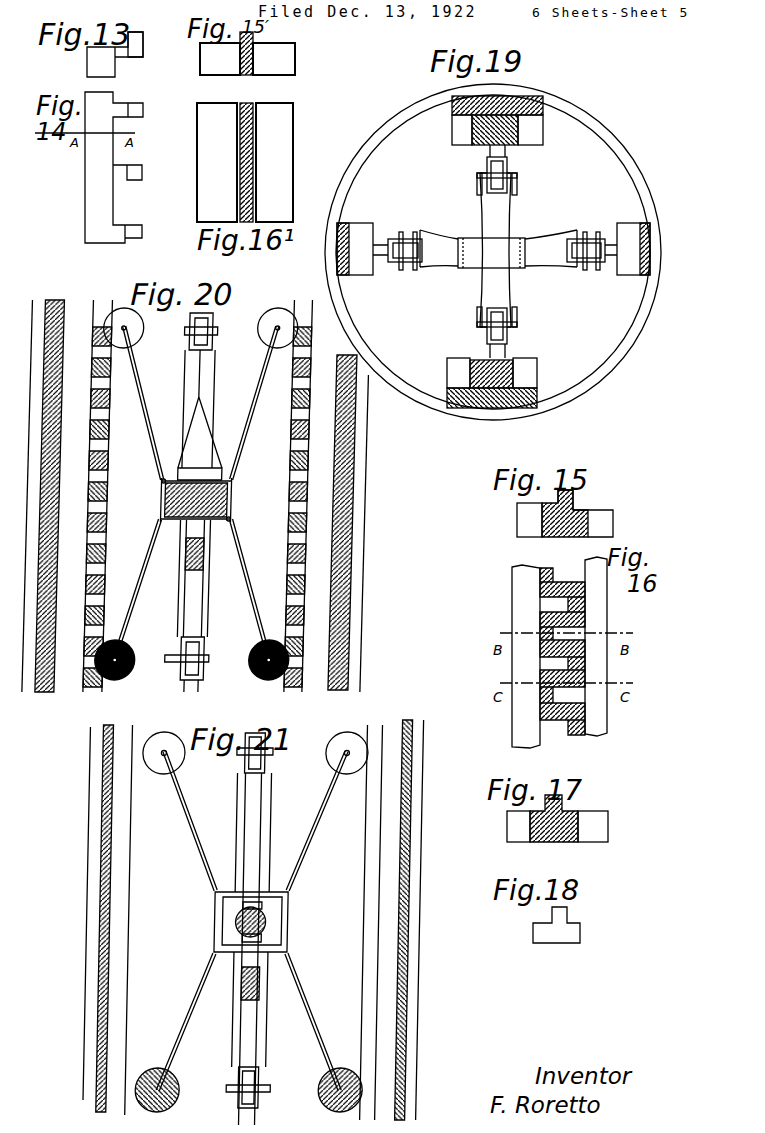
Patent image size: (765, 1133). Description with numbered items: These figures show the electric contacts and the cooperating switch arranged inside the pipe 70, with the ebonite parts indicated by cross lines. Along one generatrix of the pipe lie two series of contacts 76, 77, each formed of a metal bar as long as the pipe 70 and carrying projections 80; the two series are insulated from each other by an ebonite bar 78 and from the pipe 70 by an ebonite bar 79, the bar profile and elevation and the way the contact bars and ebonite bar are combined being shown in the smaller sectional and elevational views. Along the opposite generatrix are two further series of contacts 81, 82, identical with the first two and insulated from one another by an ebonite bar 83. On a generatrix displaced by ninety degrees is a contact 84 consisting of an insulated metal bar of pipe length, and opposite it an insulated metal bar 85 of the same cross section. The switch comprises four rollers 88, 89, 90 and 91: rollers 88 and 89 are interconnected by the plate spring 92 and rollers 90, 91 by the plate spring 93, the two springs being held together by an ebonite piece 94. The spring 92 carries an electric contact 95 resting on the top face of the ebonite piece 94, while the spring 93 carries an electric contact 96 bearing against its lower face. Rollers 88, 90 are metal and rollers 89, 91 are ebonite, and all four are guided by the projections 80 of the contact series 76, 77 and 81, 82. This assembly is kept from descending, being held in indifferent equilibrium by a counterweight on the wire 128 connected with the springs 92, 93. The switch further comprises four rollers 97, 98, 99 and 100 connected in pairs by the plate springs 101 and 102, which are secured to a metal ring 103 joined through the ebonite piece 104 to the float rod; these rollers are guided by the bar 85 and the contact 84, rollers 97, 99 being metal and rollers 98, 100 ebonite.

In FIG. 19, the pipe 70 is at (615, 137).
In FIG. 20, the pipe 70 is at (368, 497).
In FIG. 21, the pipe 70 is at (414, 764).
In FIG. 13, the series of contacts 76 is at (87, 73).
In FIG. 14, the series of contacts 76 is at (86, 188).
In FIG. 15′, the series of contacts 76 is at (220, 77).
In FIG. 16′, the series of contacts 76 is at (222, 110).
In FIG. 19, the series of contacts 76 is at (452, 130).
In FIG. 20, the series of contacts 76 is at (98, 316).
In FIG. 15, the series of contacts 76 is at (517, 521).
In FIG. 16, the series of contacts 76 is at (512, 590).
In FIG. 17, the series of contacts 76 is at (507, 829).
In FIG. 15′, the series of contacts 77 is at (276, 77).
In FIG. 16′, the series of contacts 77 is at (278, 110).
In FIG. 19, the series of contacts 77 is at (543, 135).
In FIG. 15, the series of contacts 77 is at (613, 520).
In FIG. 16, the series of contacts 77 is at (607, 612).
In FIG. 17, the series of contacts 77 is at (608, 829).
In FIG. 15′, the ebonite bar 78 is at (246, 53).
In FIG. 16′, the ebonite bar 78 is at (246, 162).
In FIG. 19, the ebonite bar 78 is at (490, 140).
In FIG. 15, the ebonite bar 78 is at (552, 540).
In FIG. 16, the ebonite bar 78 is at (546, 568).
In FIG. 17, the ebonite bar 78 is at (548, 845).
In FIG. 19, the ebonite bar 79 is at (520, 104).
In FIG. 20, the ebonite bar 79 is at (70, 300).
In FIG. 13, the projections 80 is at (143, 43).
In FIG. 14, the projections 80 is at (143, 110).
In FIG. 15, the projections 80 is at (573, 494).
In FIG. 16, the projections 80 is at (560, 738).
In FIG. 19, the series of contacts 81 is at (532, 370).
In FIG. 19, the series of contacts 82 is at (449, 367).
In FIG. 20, the series of contacts 82 is at (338, 358).
In FIG. 19, the ebonite bar 83 is at (520, 360).
In FIG. 19, the contact 84 is at (362, 265).
In FIG. 21, the contact 84 is at (136, 732).
In FIG. 18, the contact 84 is at (580, 933).
In FIG. 19, the metal bar 85 is at (630, 272).
In FIG. 21, the metal bar 85 is at (402, 720).
In FIG. 19, the roller 88 is at (507, 165).
In FIG. 20, the roller 88 is at (148, 329).
In FIG. 21, the roller 88 is at (265, 768).
In FIG. 20, the roller 89 is at (128, 676).
In FIG. 21, the roller 89 is at (265, 1075).
In FIG. 19, the roller 90 is at (503, 335).
In FIG. 20, the roller 90 is at (281, 322).
In FIG. 20, the roller 91 is at (266, 655).
In FIG. 19, the plate spring 92 is at (511, 203).
In FIG. 20, the plate spring 92 is at (146, 390).
In FIG. 21, the plate spring 92 is at (264, 820).
In FIG. 19, the plate spring 93 is at (505, 282).
In FIG. 20, the plate spring 93 is at (252, 418).
In FIG. 20, the ebonite piece 94 is at (168, 502).
In FIG. 21, the ebonite piece 94 is at (269, 921).
In FIG. 20, the electric contact 95 is at (165, 479).
In FIG. 21, the electric contact 95 is at (260, 905).
In FIG. 20, the electric contact 96 is at (238, 518).
In FIG. 21, the electric contact 96 is at (246, 939).
In FIG. 19, the roller 97 is at (590, 248).
In FIG. 20, the roller 97 is at (215, 325).
In FIG. 21, the roller 97 is at (343, 790).
In FIG. 20, the roller 98 is at (213, 668).
In FIG. 21, the roller 98 is at (326, 1097).
In FIG. 19, the roller 99 is at (400, 245).
In FIG. 21, the roller 99 is at (184, 771).
In FIG. 21, the roller 100 is at (180, 1095).
In FIG. 19, the plate spring 101 is at (440, 268).
In FIG. 21, the plate spring 101 is at (207, 863).
In FIG. 19, the plate spring 102 is at (560, 268).
In FIG. 20, the plate spring 102 is at (216, 364).
In FIG. 21, the plate spring 102 is at (305, 860).
In FIG. 19, the metal ring 103 is at (477, 240).
In FIG. 20, the metal ring 103 is at (220, 465).
In FIG. 21, the metal ring 103 is at (284, 894).
In FIG. 20, the ebonite piece 104 is at (194, 556).
In FIG. 21, the ebonite piece 104 is at (262, 992).
In FIG. 20, the wire 128 is at (203, 395).